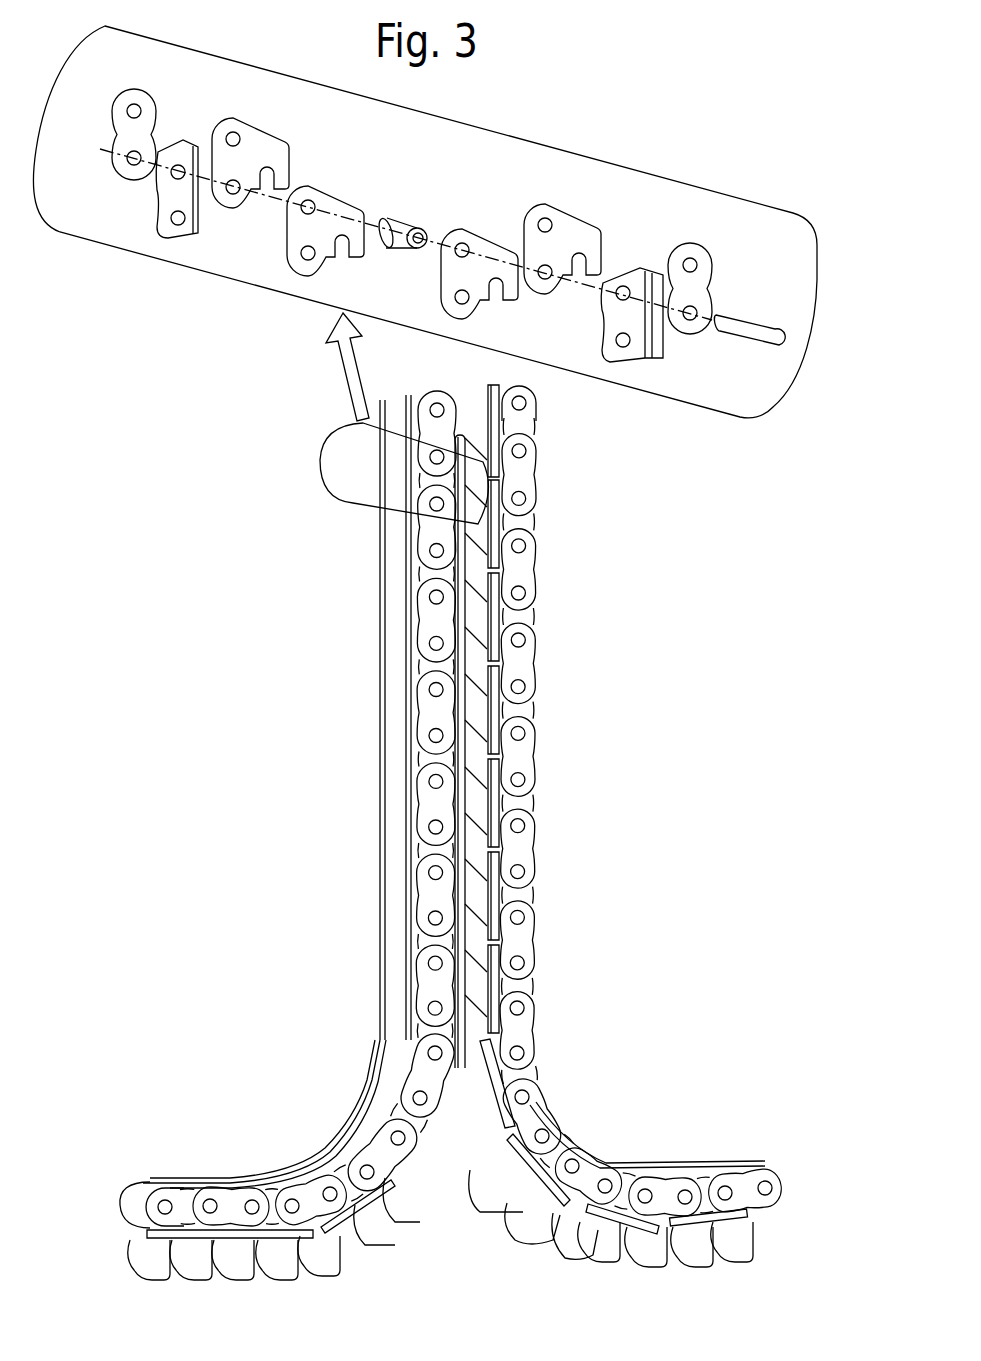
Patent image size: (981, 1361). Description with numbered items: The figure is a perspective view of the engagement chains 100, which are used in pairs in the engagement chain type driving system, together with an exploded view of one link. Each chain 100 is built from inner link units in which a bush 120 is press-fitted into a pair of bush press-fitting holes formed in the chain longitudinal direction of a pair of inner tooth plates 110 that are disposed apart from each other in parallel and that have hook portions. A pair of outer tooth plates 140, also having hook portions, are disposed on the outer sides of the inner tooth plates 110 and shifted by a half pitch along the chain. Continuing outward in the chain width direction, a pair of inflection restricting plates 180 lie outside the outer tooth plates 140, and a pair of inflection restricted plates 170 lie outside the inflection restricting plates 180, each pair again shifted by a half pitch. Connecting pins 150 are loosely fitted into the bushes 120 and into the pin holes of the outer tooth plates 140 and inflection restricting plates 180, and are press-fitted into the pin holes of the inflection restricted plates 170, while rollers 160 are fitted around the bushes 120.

The engagement chain 100 is at (387, 1252).
The inner tooth plate 110 is at (332, 190).
The bush 120 is at (421, 230).
The outer tooth plate 140 is at (260, 130).
The connecting pin 150 is at (745, 323).
The roller 160 is at (395, 217).
The inflection restricted plate 170 is at (127, 98).
The inflection restricting plate 180 is at (187, 140).